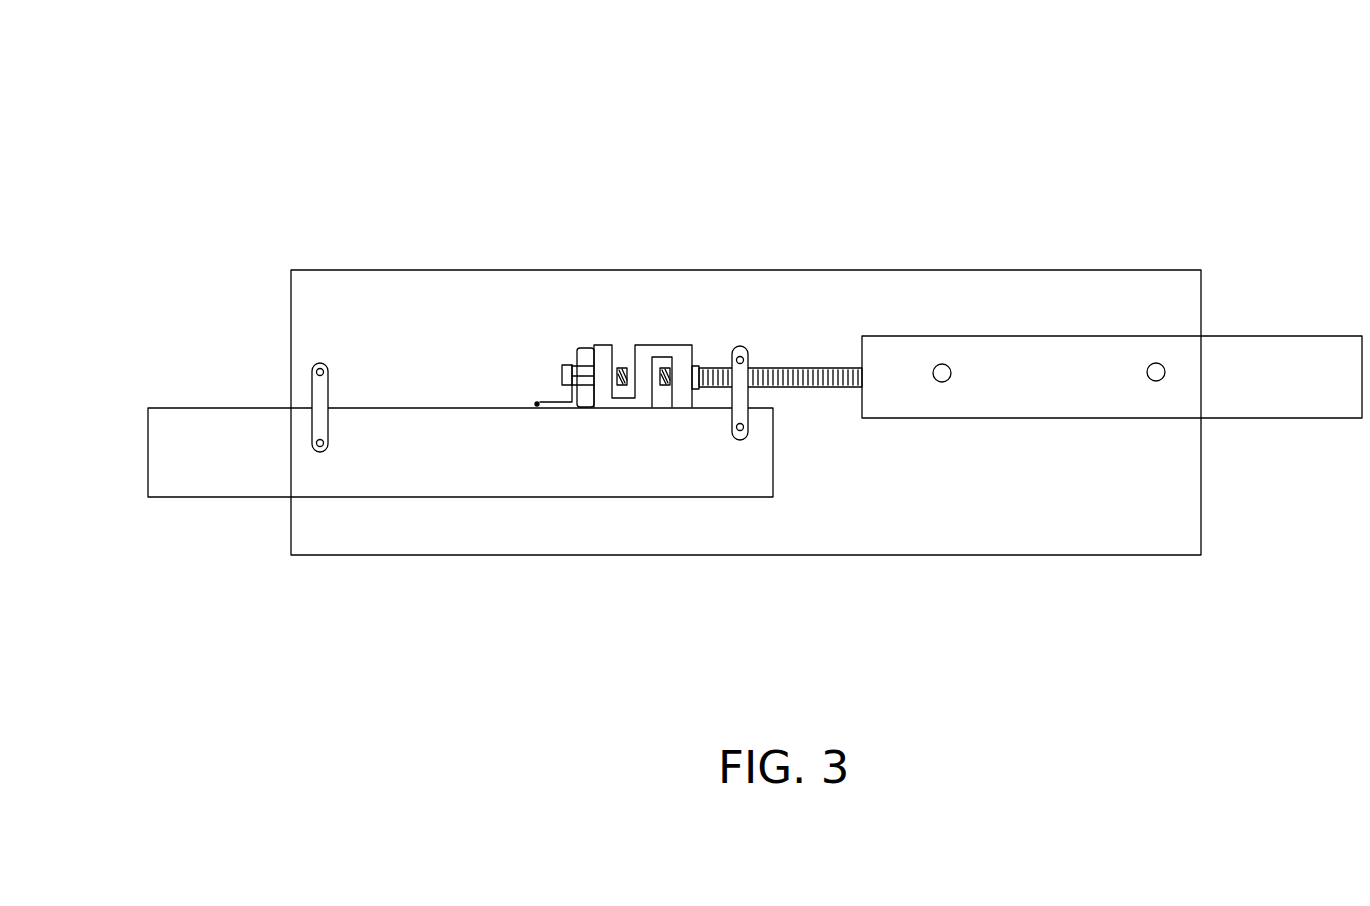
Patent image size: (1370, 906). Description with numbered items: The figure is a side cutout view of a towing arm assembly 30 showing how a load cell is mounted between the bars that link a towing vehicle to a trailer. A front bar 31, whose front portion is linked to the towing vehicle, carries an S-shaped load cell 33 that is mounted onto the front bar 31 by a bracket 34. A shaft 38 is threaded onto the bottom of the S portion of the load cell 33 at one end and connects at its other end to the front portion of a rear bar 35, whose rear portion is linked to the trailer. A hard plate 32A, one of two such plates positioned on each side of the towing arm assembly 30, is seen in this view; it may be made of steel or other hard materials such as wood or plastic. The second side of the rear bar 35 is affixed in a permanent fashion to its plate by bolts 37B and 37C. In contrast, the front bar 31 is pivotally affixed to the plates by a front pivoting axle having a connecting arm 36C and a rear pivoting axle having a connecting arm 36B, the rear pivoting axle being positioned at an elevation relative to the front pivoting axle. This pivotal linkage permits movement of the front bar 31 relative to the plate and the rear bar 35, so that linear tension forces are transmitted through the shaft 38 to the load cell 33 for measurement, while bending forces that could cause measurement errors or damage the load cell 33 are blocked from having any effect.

The towing arm assembly 30 is at (552, 167).
The front bar 31 is at (175, 445).
The hard plate 32A is at (398, 313).
The S-shaped load cell 33 is at (684, 355).
The bracket 34 is at (574, 358).
The rear bar 35 is at (1227, 367).
The connecting arm 36B is at (319, 366).
The connecting arm 36C is at (745, 350).
The bolt 37B is at (1156, 363).
The bolt 37C is at (942, 363).
The shaft 38 is at (805, 365).